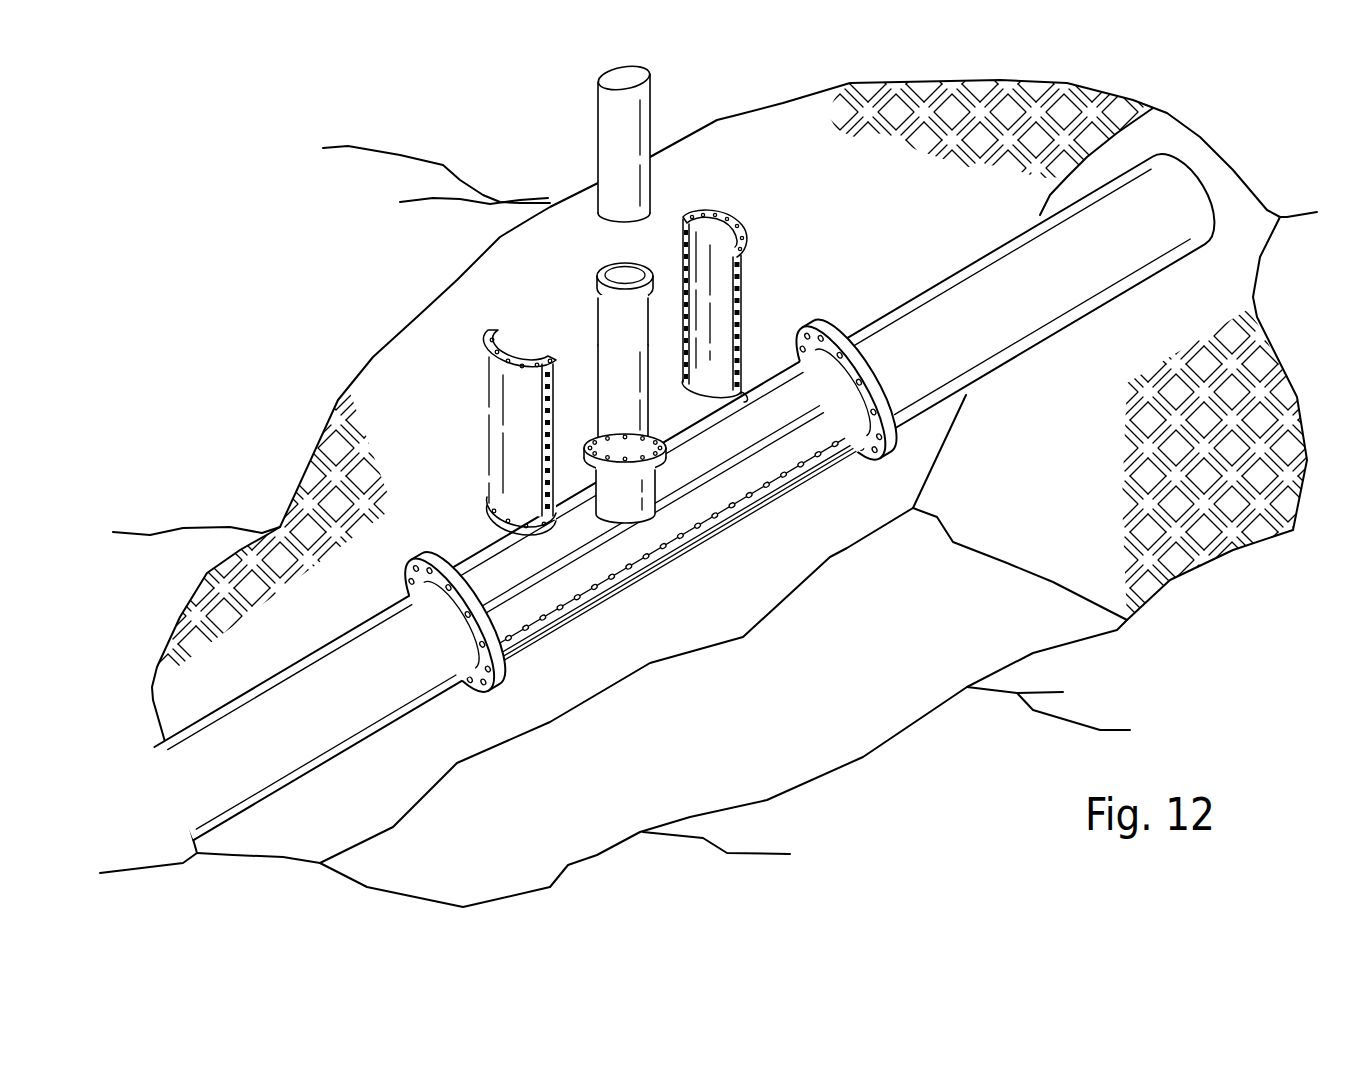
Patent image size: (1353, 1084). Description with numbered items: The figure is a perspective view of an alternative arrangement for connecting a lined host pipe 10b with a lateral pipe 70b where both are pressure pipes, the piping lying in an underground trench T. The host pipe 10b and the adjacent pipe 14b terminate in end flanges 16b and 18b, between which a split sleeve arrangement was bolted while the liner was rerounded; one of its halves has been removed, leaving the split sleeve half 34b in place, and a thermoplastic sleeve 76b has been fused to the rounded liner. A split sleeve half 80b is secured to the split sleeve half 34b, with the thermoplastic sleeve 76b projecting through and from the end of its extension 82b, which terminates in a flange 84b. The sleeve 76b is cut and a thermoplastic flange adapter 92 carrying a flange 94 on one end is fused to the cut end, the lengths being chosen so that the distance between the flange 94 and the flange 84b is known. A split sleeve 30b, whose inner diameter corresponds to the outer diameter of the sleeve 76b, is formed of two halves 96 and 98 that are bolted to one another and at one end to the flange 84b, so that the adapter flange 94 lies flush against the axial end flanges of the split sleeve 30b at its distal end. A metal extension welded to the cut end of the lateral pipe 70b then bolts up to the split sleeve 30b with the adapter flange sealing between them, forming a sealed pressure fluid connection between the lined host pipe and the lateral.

The host pipe 10b is at (281, 746).
The adjacent pipe 14b is at (1022, 318).
The end flange 16b is at (480, 693).
The end flange 18b is at (907, 388).
The split sleeve 30b is at (438, 415).
The split sleeve half 34b is at (560, 627).
The lateral pipe 70b is at (602, 128).
The thermoplastic sleeve 76b is at (628, 408).
The split sleeve half 80b is at (495, 565).
The extension 82b is at (640, 518).
The flange 84b is at (662, 471).
The flange adapter 92 is at (607, 310).
The flange 94 is at (608, 263).
The split sleeve half 96 is at (508, 397).
The split sleeve half 98 is at (664, 261).
The trench T is at (883, 133).